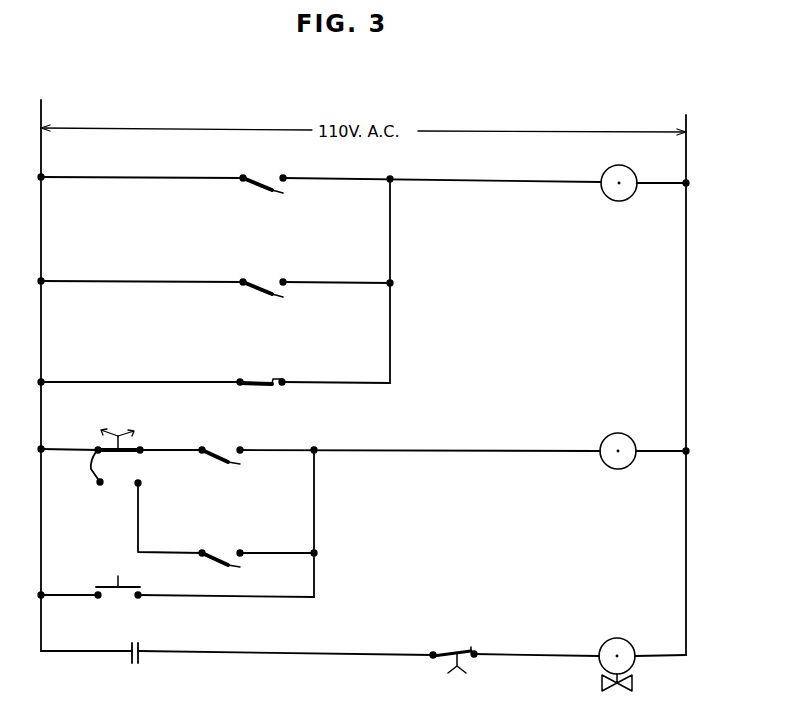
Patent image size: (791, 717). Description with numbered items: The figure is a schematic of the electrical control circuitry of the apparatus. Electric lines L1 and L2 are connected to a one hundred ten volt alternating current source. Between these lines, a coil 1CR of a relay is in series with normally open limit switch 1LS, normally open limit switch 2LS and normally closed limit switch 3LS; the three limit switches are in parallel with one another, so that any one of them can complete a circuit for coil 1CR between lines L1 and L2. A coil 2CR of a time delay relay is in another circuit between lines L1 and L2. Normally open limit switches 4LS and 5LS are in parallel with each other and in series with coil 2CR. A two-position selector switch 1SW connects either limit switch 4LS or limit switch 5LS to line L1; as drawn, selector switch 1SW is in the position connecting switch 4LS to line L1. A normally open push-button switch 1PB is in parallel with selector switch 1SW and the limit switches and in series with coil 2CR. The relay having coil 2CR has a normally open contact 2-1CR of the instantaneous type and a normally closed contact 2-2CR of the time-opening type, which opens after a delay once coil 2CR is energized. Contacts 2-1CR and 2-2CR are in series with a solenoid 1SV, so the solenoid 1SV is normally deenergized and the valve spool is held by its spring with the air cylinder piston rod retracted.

The electric line L1 is at (42, 152).
The electric line L2 is at (687, 156).
The normally open limit switch 1LS is at (262, 187).
The normally open limit switch 2LS is at (262, 291).
The normally closed limit switch 3LS is at (263, 381).
The normally open limit switch 4LS is at (217, 456).
The normally open limit switch 5LS is at (213, 556).
The 2-position selector switch 1SW is at (122, 434).
The normally open push-button switch 1PB is at (116, 578).
The coil of a relay 1CR is at (606, 171).
The coil of a time delay relay 2CR is at (604, 436).
The normally open contact 2-1CR is at (141, 649).
The normally closed contact 2-2CR is at (462, 651).
The solenoid 1SV is at (604, 643).